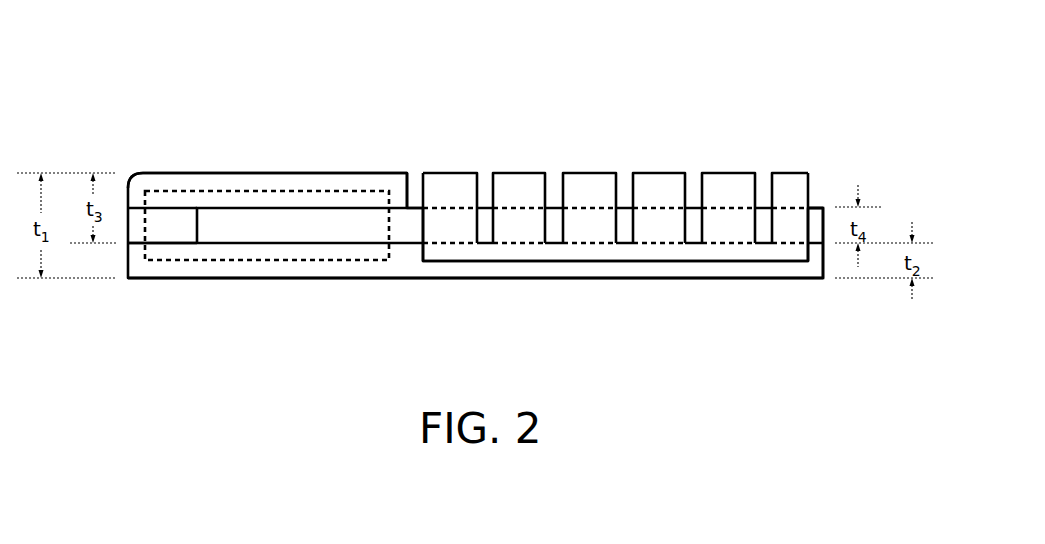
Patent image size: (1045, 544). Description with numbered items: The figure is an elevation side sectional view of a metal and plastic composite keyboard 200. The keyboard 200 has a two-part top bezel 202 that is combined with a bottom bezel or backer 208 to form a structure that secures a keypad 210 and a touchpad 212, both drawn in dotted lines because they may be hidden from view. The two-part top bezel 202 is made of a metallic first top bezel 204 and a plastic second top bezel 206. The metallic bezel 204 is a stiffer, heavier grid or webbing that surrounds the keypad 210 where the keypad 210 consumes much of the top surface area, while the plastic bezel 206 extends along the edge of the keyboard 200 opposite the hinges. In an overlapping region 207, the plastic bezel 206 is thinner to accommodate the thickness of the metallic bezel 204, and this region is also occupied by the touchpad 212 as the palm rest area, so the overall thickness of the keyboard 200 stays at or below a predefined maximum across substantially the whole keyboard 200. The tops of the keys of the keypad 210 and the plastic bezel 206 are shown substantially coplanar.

The metal and plastic composite keyboard 200 is at (176, 78).
The two-part top bezel 202 is at (847, 177).
The metallic first top bezel 204 is at (475, 225).
The plastic second top bezel 206 is at (170, 173).
The overlapping region 207 is at (300, 142).
The bottom bezel 208 is at (592, 278).
The keypad 210 is at (663, 173).
The touchpad 212 is at (325, 190).